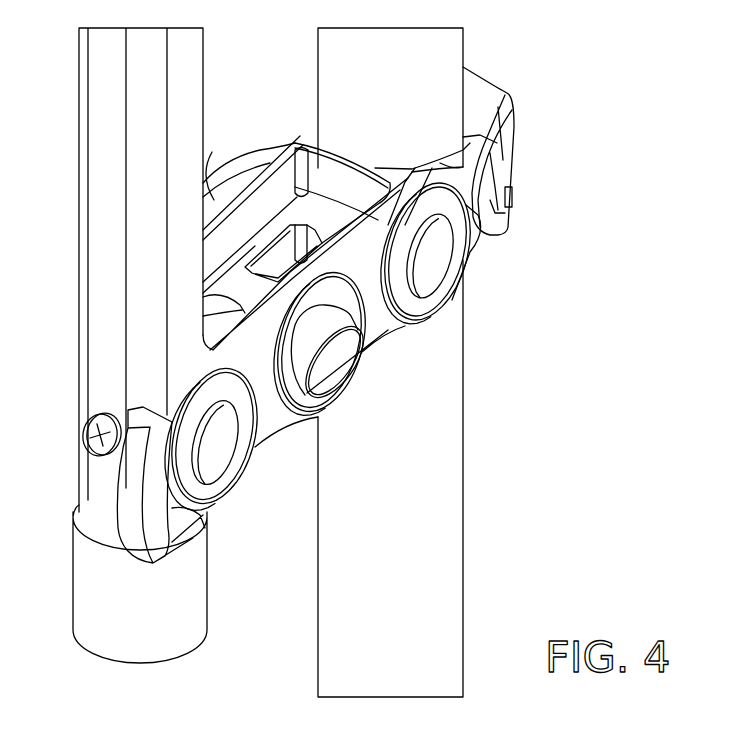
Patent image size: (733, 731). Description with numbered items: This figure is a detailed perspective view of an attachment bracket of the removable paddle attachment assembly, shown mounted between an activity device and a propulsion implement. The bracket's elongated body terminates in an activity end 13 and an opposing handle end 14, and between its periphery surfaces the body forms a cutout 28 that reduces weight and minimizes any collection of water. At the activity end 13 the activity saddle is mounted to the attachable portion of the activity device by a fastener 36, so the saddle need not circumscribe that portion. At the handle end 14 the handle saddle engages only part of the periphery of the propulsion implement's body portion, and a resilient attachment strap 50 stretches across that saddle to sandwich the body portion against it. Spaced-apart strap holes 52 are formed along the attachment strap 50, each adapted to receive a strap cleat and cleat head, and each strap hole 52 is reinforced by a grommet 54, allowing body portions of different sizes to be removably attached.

The activity end 13 is at (219, 340).
The handle end 14 is at (299, 129).
The cutout 28 is at (280, 204).
The fastener 36 is at (82, 430).
The attachment strap 50 is at (473, 242).
The strap hole 52 is at (418, 248).
The grommet 54 is at (407, 307).